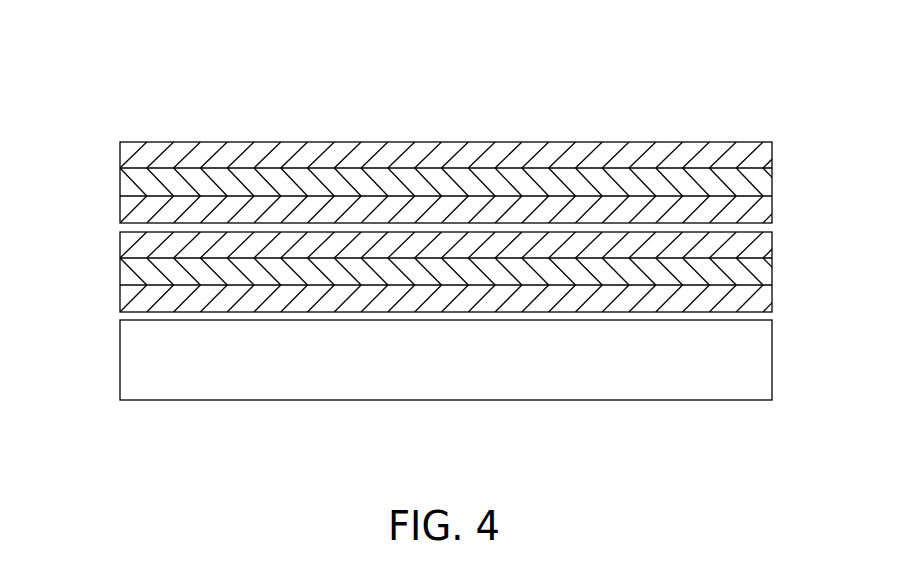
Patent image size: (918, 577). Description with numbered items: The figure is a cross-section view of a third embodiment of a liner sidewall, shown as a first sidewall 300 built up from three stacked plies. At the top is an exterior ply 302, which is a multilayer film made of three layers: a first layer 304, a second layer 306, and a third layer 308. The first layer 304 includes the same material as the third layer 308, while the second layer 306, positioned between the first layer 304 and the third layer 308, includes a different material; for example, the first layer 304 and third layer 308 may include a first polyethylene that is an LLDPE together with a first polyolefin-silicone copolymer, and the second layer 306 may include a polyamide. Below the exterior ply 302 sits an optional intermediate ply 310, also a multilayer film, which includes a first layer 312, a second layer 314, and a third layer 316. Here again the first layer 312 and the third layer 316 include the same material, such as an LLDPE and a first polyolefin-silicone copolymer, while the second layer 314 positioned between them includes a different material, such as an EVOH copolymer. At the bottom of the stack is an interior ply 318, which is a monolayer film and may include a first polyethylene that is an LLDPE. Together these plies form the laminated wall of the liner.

The first sidewall 300 is at (508, 98).
The exterior ply 302 is at (107, 144).
The first layer 304 is at (763, 156).
The second layer 306 is at (764, 185).
The third layer 308 is at (764, 213).
The intermediate ply 310 is at (107, 233).
The first layer 312 is at (763, 244).
The second layer 314 is at (764, 273).
The third layer 316 is at (764, 301).
The interior ply 318 is at (107, 321).